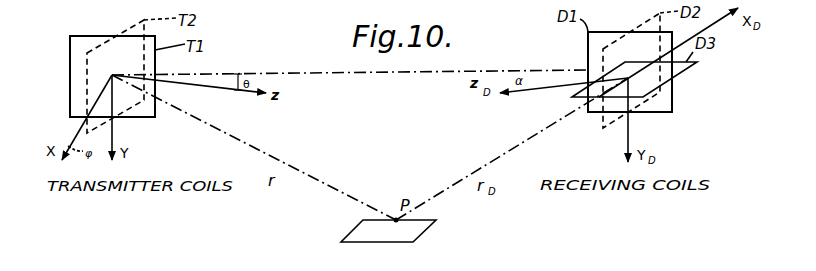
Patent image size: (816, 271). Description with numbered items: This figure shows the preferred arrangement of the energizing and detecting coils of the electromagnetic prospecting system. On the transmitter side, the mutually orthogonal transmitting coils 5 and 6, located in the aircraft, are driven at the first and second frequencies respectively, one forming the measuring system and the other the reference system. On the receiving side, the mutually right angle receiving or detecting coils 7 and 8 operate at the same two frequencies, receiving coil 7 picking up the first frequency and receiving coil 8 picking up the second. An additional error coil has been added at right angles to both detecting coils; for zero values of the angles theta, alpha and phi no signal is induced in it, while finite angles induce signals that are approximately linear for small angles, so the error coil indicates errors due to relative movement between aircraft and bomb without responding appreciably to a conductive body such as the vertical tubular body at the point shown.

The transmitting coil 5 is at (70, 50).
The transmitting coil 6 is at (137, 108).
The receiving coil 7 is at (672, 95).
The receiving coil 8 is at (600, 101).